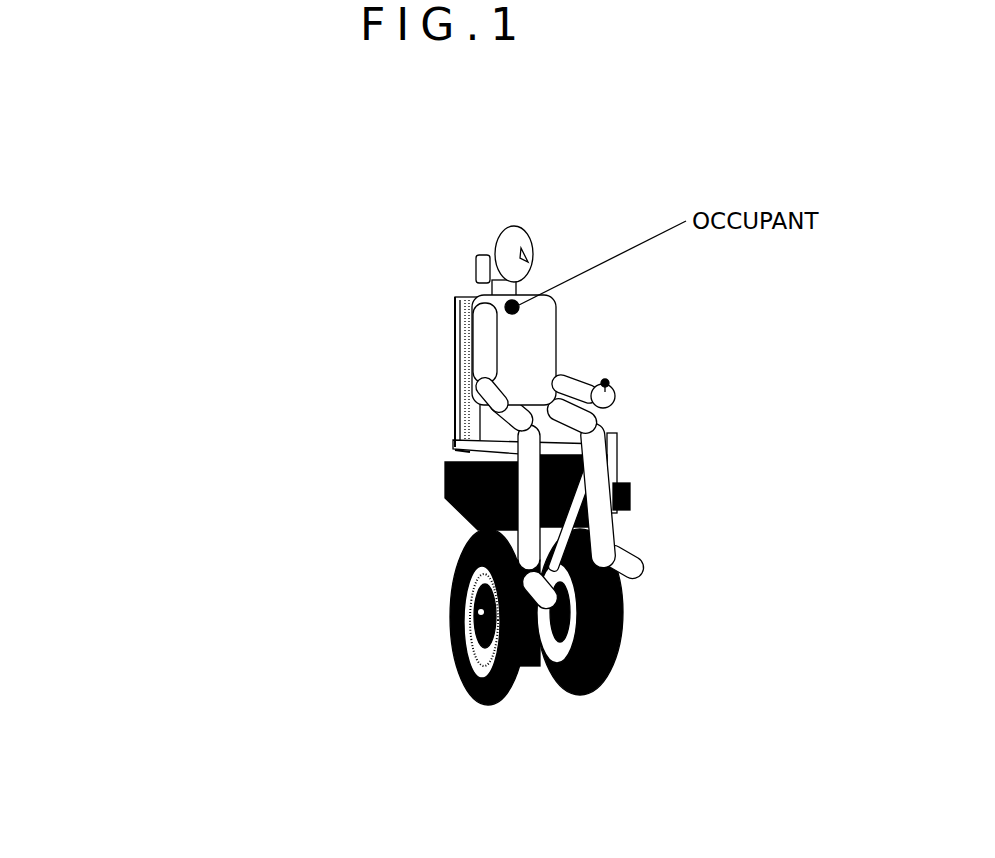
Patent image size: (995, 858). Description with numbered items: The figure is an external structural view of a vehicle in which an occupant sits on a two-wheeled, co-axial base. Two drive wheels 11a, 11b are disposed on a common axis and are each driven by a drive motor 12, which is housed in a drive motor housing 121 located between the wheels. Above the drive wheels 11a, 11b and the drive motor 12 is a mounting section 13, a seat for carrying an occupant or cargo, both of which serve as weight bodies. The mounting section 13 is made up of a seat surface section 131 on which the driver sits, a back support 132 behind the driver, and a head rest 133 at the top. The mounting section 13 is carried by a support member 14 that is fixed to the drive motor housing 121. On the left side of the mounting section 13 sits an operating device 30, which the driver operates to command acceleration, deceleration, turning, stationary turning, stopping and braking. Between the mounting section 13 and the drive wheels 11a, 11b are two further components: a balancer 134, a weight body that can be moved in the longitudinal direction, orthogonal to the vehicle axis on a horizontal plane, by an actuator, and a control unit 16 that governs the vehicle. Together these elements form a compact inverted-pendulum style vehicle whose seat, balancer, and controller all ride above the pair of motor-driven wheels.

The head rest 133 is at (383, 210).
The back support 132 is at (326, 316).
The mounting section 13 is at (442, 294).
The seat surface section 131 is at (448, 434).
The balancer 134 is at (430, 448).
The control unit 16 is at (299, 496).
The support member 14 is at (422, 614).
The drive motor 12 is at (470, 618).
The drive wheel 11a is at (390, 663).
The drive wheel 11b is at (660, 650).
The drive motor housing 121 is at (539, 692).
The operating device 30 is at (708, 300).